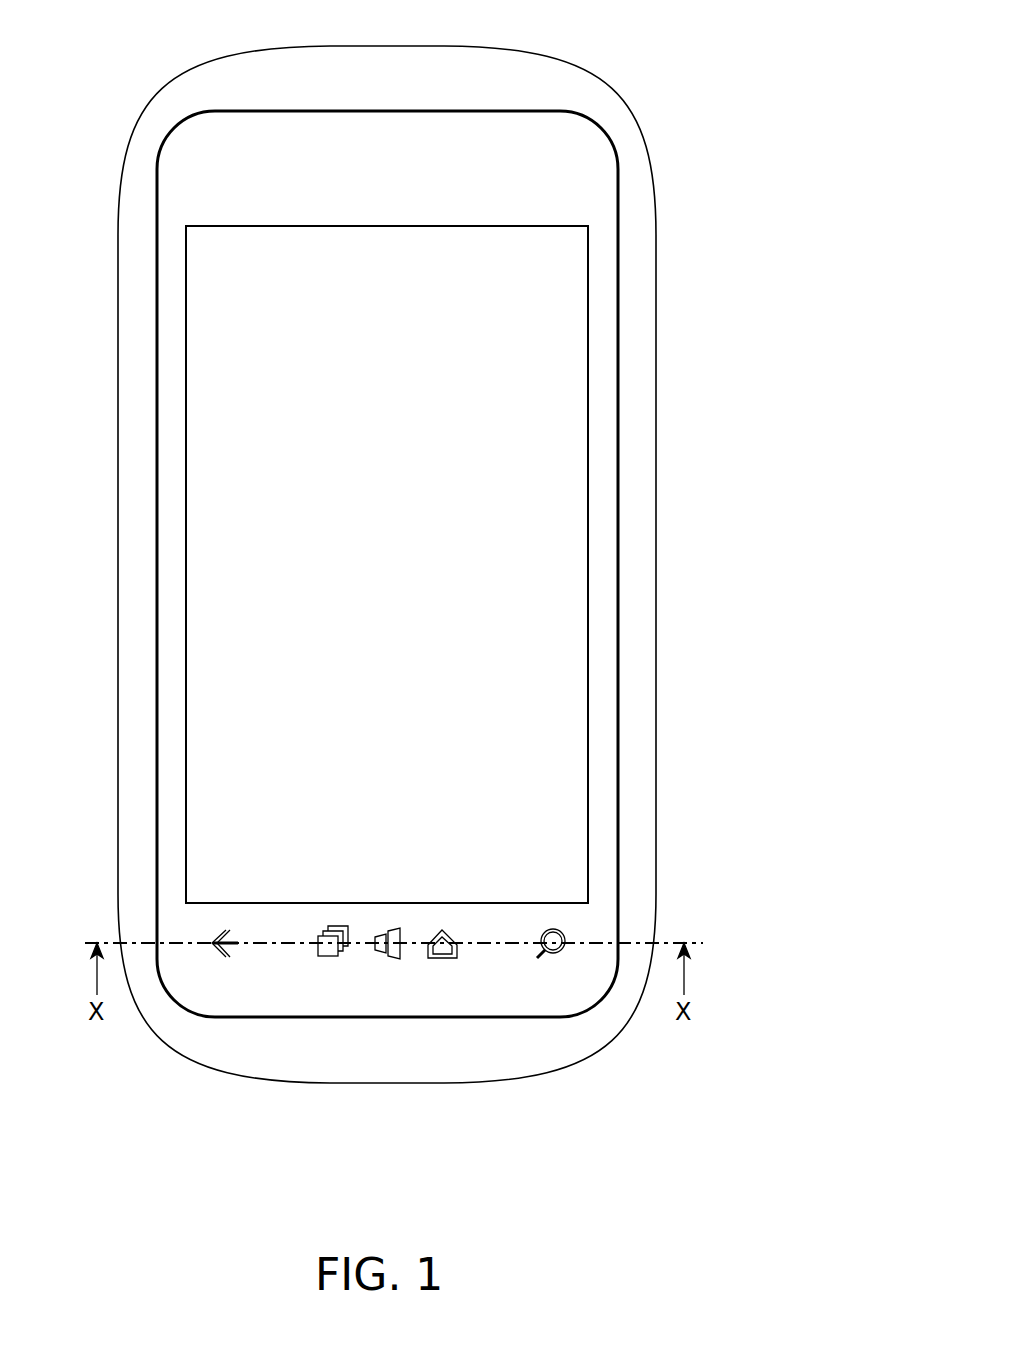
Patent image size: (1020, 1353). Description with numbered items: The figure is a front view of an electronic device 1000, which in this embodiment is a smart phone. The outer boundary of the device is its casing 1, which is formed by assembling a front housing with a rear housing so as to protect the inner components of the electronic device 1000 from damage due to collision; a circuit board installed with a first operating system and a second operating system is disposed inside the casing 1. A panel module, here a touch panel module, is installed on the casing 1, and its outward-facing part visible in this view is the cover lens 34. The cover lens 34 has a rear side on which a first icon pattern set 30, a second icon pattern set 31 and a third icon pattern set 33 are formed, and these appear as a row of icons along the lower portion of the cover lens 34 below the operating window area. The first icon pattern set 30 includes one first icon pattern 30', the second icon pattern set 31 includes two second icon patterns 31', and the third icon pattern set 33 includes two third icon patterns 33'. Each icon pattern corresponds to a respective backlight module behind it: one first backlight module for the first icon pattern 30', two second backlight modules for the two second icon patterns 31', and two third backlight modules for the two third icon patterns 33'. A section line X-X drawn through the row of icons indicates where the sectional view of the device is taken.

The electronic device 1000 is at (636, 58).
The casing 1 is at (641, 218).
The cover lens 34 is at (247, 142).
The first icon pattern 30' is at (407, 898).
The first icon pattern set 30 is at (387, 943).
The second icon pattern 31' is at (386, 1022).
The second icon pattern set 31 is at (380, 1134).
The third icon pattern 33' is at (394, 1072).
The third icon pattern set 33 is at (494, 1235).